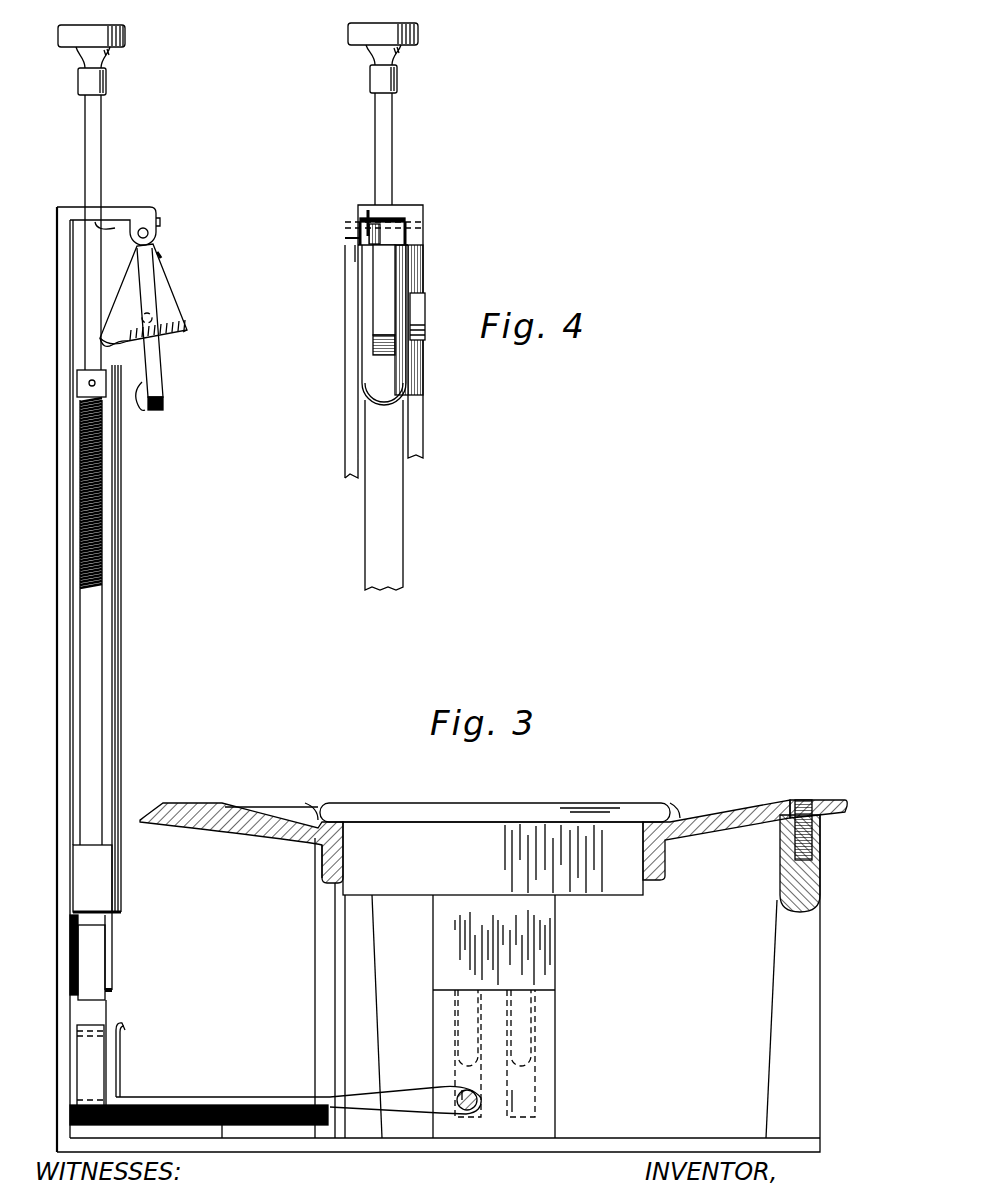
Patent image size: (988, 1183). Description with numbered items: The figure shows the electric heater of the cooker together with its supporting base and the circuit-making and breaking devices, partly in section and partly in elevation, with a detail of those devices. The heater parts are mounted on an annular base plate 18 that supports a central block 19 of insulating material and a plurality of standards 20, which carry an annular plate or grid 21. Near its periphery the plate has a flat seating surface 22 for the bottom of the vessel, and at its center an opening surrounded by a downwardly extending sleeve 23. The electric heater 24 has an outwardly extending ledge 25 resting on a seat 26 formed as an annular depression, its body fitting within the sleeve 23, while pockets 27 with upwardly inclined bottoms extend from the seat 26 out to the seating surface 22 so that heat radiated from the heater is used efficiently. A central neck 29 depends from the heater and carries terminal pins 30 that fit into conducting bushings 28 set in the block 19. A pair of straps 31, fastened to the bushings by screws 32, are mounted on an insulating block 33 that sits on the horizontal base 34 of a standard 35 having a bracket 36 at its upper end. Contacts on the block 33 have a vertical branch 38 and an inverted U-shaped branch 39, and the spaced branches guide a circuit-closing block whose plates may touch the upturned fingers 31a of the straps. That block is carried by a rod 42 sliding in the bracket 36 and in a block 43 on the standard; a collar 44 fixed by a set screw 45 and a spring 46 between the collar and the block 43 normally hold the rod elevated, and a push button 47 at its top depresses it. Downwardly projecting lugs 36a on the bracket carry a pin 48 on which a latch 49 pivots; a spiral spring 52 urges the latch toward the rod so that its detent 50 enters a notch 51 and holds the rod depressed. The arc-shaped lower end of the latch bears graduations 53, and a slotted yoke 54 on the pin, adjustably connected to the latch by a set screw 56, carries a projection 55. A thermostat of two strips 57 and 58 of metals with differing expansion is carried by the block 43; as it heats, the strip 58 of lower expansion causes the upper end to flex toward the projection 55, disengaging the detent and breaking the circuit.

In FIG. 3, the annular base plate 18 is at (598, 1138).
In FIG. 3, the block 19 is at (548, 1072).
In FIG. 3, the standards 20 is at (776, 1016).
In FIG. 3, the annular plate or grid 21 is at (830, 812).
In FIG. 3, the annular flat seating surface 22 is at (190, 802).
In FIG. 3, the flange or sleeve 23 is at (655, 856).
In FIG. 3, the electric heater 24 is at (493, 858).
In FIG. 3, the ledge 25 is at (665, 803).
In FIG. 3, the seat 26 is at (320, 850).
In FIG. 3, the pockets 27 is at (240, 806).
In FIG. 3, the bushings 28 is at (460, 1075).
In FIG. 3, the central neck 29 is at (548, 921).
In FIG. 3, the terminal pins 30 is at (462, 1009).
In FIG. 3, the straps 31 is at (200, 1087).
In FIG. 3, the upturned fingers 31a is at (120, 1062).
In FIG. 3, the screws 32 is at (470, 1108).
In FIG. 3, the block 33 is at (272, 1106).
In FIG. 3, the horizontal base 34 is at (302, 1138).
In FIG. 3, the standard 35 is at (57, 561).
In FIG. 3, the bracket 36 is at (118, 208).
In FIG. 4, the bracket 36 is at (350, 208).
In FIG. 3, the lugs 36a is at (156, 222).
In FIG. 4, the lugs 36a is at (345, 243).
In FIG. 3, the vertical branch 38 is at (93, 965).
In FIG. 3, the inverted U-shaped branch 39 is at (82, 1058).
In FIG. 3, the rod 42 is at (101, 152).
In FIG. 4, the rod 42 is at (392, 128).
In FIG. 3, the block 43 is at (97, 878).
In FIG. 3, the collar 44 is at (77, 378).
In FIG. 3, the set screw 45 is at (90, 385).
In FIG. 3, the spring 46 is at (102, 606).
In FIG. 3, the operating handle or push button 47 is at (122, 27).
In FIG. 4, the operating handle or push button 47 is at (418, 33).
In FIG. 3, the pin 48 is at (148, 234).
In FIG. 4, the pin 48 is at (355, 250).
In FIG. 3, the latch 49 is at (166, 292).
In FIG. 4, the latch 49 is at (390, 262).
In FIG. 3, the detent 50 is at (116, 351).
In FIG. 3, the notch 51 is at (113, 237).
In FIG. 4, the spiral spring 52 is at (385, 220).
In FIG. 3, the graduations 53 is at (185, 333).
In FIG. 3, the yoke 54 is at (162, 372).
In FIG. 4, the yoke 54 is at (365, 362).
In FIG. 3, the projection 55 is at (147, 409).
In FIG. 4, the set screw 56 is at (425, 316).
In FIG. 3, the strip 57 is at (115, 752).
In FIG. 3, the strip 58 is at (121, 775).
In FIG. 4, the strip 58 is at (400, 508).